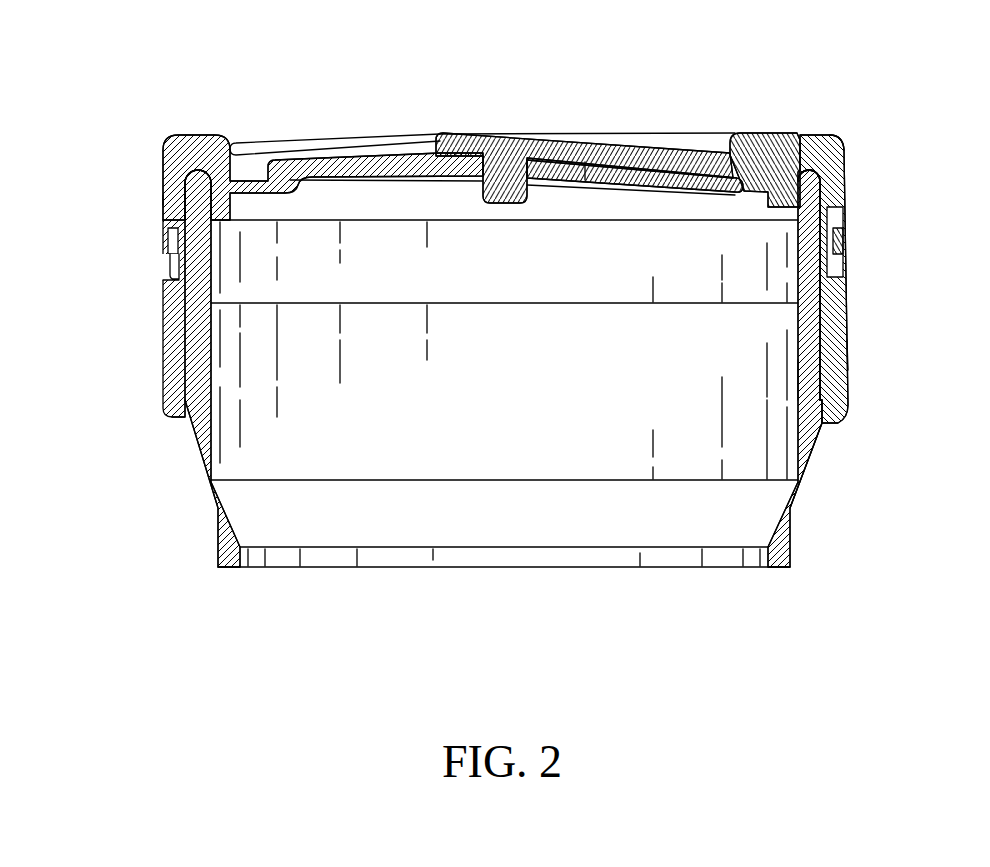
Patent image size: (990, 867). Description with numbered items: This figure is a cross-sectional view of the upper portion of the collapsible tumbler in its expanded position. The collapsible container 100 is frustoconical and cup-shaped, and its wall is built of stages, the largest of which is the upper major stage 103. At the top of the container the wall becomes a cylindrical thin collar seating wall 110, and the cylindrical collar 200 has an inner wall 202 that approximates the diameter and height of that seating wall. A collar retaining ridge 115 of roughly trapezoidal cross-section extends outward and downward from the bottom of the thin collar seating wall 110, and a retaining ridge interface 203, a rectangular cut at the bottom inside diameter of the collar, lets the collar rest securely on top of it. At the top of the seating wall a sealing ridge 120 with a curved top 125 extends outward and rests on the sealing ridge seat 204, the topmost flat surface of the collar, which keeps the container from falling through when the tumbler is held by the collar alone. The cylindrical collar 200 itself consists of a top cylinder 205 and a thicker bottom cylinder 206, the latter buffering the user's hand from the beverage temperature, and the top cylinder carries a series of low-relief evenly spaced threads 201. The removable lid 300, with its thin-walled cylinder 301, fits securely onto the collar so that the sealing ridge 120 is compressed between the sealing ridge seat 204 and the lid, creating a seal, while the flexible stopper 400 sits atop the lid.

The collapsible container 100 is at (577, 380).
The upper major stage 103 is at (802, 370).
The thin collar seating wall 110 is at (817, 332).
The collar retaining ridge 115 is at (818, 427).
The sealing ridge 120 is at (822, 187).
The curved top 125 is at (838, 142).
The cylindrical collar 200 is at (501, 279).
The evenly spaced threads 201 is at (170, 250).
The inner wall 202 is at (822, 293).
The retaining ridge interface 203 is at (174, 416).
The sealing ridge seat 204 is at (183, 200).
The top cylinder 205 is at (825, 208).
The bottom cylinder 206 is at (837, 355).
The removable lid 300 is at (511, 138).
The thin-walled cylinder 301 is at (842, 252).
The flexible stopper 400 is at (468, 118).